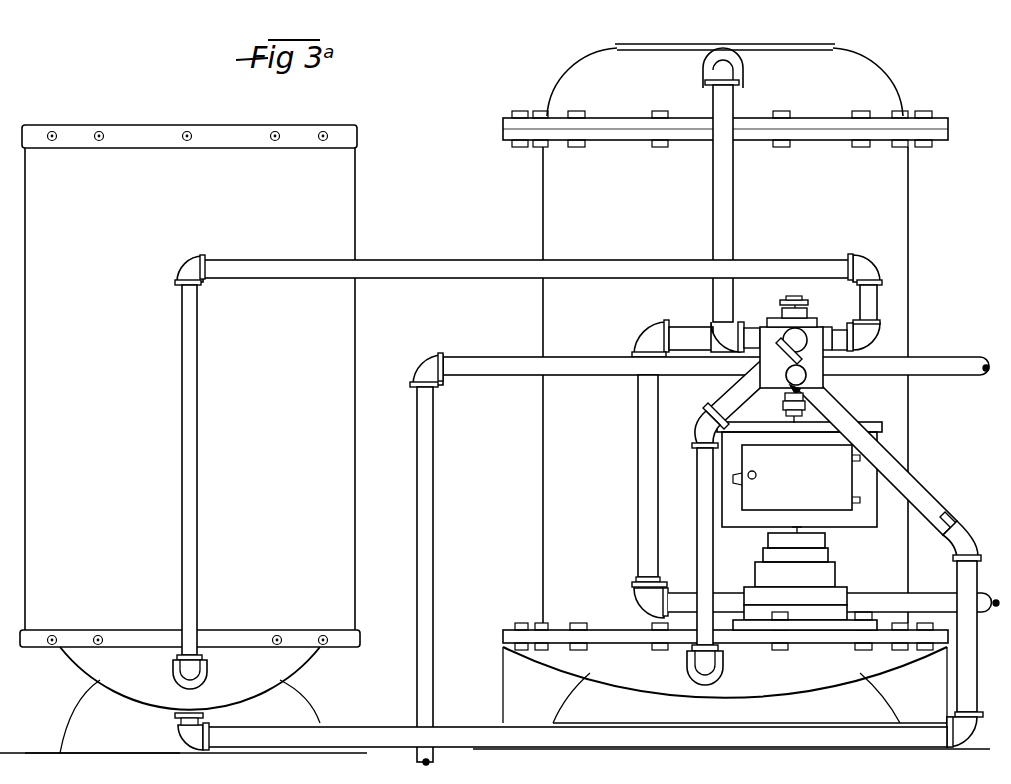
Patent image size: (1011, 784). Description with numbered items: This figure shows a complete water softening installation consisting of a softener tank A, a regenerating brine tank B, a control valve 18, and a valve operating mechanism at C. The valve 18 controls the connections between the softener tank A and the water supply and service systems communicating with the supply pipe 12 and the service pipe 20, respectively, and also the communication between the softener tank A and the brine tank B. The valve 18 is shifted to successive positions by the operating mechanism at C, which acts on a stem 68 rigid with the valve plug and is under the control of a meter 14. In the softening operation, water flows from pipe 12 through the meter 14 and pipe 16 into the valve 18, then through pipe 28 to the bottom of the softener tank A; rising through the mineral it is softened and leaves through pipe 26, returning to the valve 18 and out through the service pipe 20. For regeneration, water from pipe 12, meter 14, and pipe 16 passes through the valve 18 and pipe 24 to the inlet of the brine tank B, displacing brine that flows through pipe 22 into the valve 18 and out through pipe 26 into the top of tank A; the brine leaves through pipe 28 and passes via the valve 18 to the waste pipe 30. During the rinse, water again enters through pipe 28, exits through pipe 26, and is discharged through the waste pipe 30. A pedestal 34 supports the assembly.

The softener tank A is at (557, 213).
The regenerating brine tank B is at (340, 222).
The valve operating mechanism C is at (827, 437).
The supply pipe 12 is at (873, 595).
The meter 14 is at (827, 570).
The pipe 16 is at (645, 482).
The valve 18 is at (806, 328).
The service pipe 20 is at (937, 360).
The pipe 22 is at (833, 333).
The pipe 24 is at (927, 502).
The pipe 26 is at (750, 333).
The pipe 28 is at (730, 402).
The waste pipe 30 is at (600, 374).
The pedestal 34 is at (768, 533).
The stem 68 is at (787, 413).